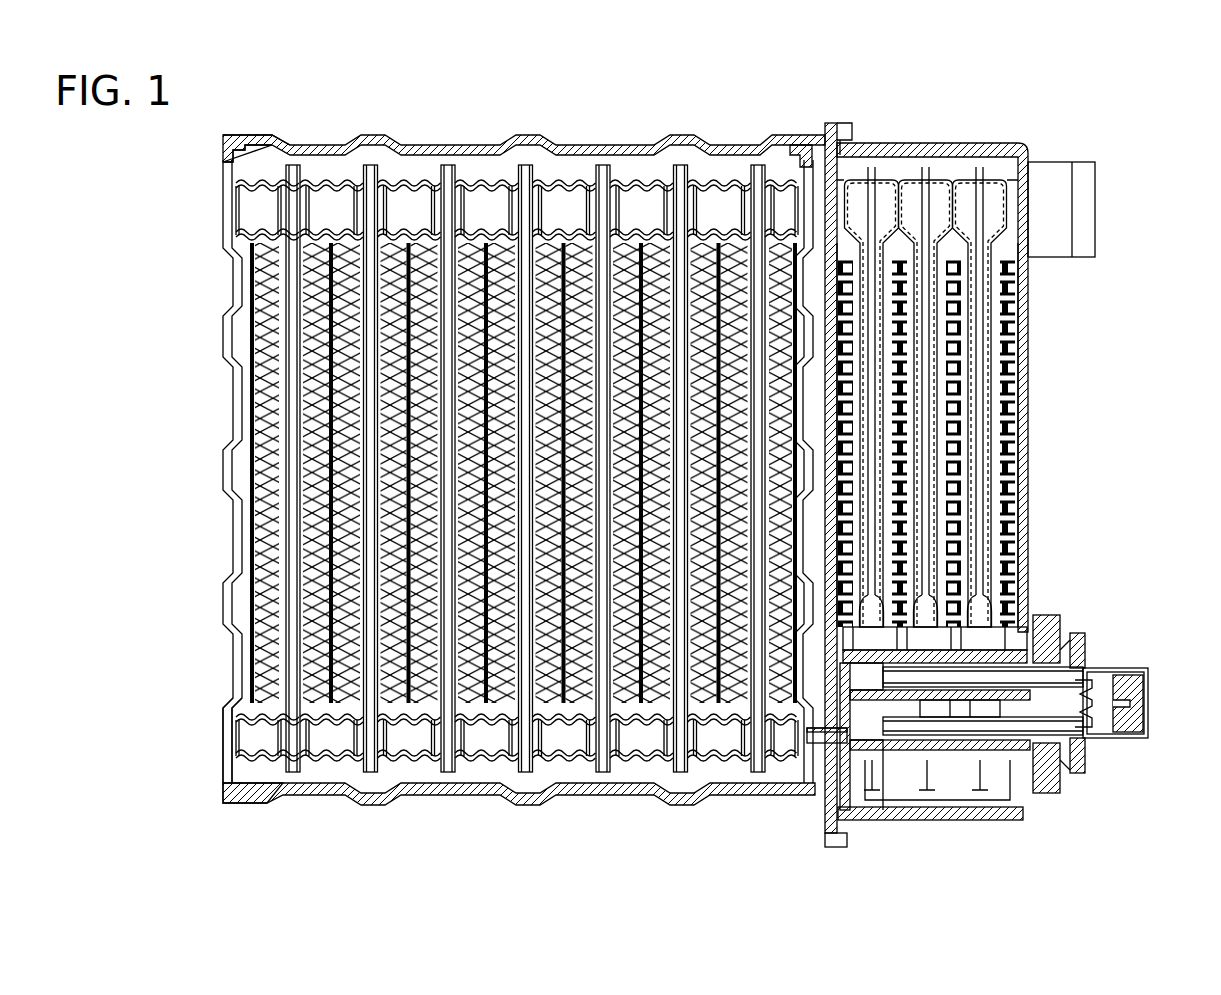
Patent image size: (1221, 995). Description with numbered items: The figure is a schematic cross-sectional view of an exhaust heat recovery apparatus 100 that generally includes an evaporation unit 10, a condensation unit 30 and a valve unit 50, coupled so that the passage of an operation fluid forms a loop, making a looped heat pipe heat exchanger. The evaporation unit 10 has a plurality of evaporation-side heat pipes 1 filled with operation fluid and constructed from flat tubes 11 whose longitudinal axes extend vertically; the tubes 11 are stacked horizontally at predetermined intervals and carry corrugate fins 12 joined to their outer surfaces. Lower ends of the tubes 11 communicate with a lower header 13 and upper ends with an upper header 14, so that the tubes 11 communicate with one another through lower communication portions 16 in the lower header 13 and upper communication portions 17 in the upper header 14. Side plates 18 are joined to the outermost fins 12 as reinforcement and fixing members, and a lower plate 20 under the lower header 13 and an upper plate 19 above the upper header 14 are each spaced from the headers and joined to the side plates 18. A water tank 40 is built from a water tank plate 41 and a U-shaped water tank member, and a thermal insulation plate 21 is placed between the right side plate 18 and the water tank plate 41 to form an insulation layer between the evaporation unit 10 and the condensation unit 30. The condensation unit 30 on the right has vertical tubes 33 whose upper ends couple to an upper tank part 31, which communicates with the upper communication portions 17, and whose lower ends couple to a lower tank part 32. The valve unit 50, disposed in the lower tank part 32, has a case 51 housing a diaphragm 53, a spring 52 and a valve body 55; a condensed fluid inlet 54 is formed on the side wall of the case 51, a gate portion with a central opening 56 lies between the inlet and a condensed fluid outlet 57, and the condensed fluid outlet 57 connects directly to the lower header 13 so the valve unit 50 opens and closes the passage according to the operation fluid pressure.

The exhaust heat recovery apparatus 100 is at (422, 136).
The evaporation-side heat pipe 1 is at (270, 308).
The evaporation unit 10 is at (220, 376).
The tube 11 is at (290, 430).
The fin 12 is at (258, 494).
The lower header 13 is at (245, 697).
The upper header 14 is at (255, 245).
The lower communication portion 16 is at (250, 735).
The upper communication portion 17 is at (250, 200).
The side plate 18 is at (235, 533).
The upper plate 19 is at (230, 150).
The lower plate 20 is at (258, 800).
The thermal insulation plate 21 is at (827, 160).
The condensation unit 30 is at (941, 168).
The upper tank part 31 is at (995, 185).
The lower tank part 32 is at (995, 630).
The tube 33 is at (1015, 310).
The water tank 40 is at (977, 146).
The water tank plate 41 is at (858, 147).
The valve unit 50 is at (1132, 658).
The case 51 is at (1137, 740).
The spring 52 is at (1092, 725).
The diaphragm 53 is at (1086, 665).
The condensed fluid inlet 54 is at (960, 740).
The valve body 55 is at (893, 715).
The opening 56 is at (930, 730).
The condensed fluid outlet 57 is at (806, 745).